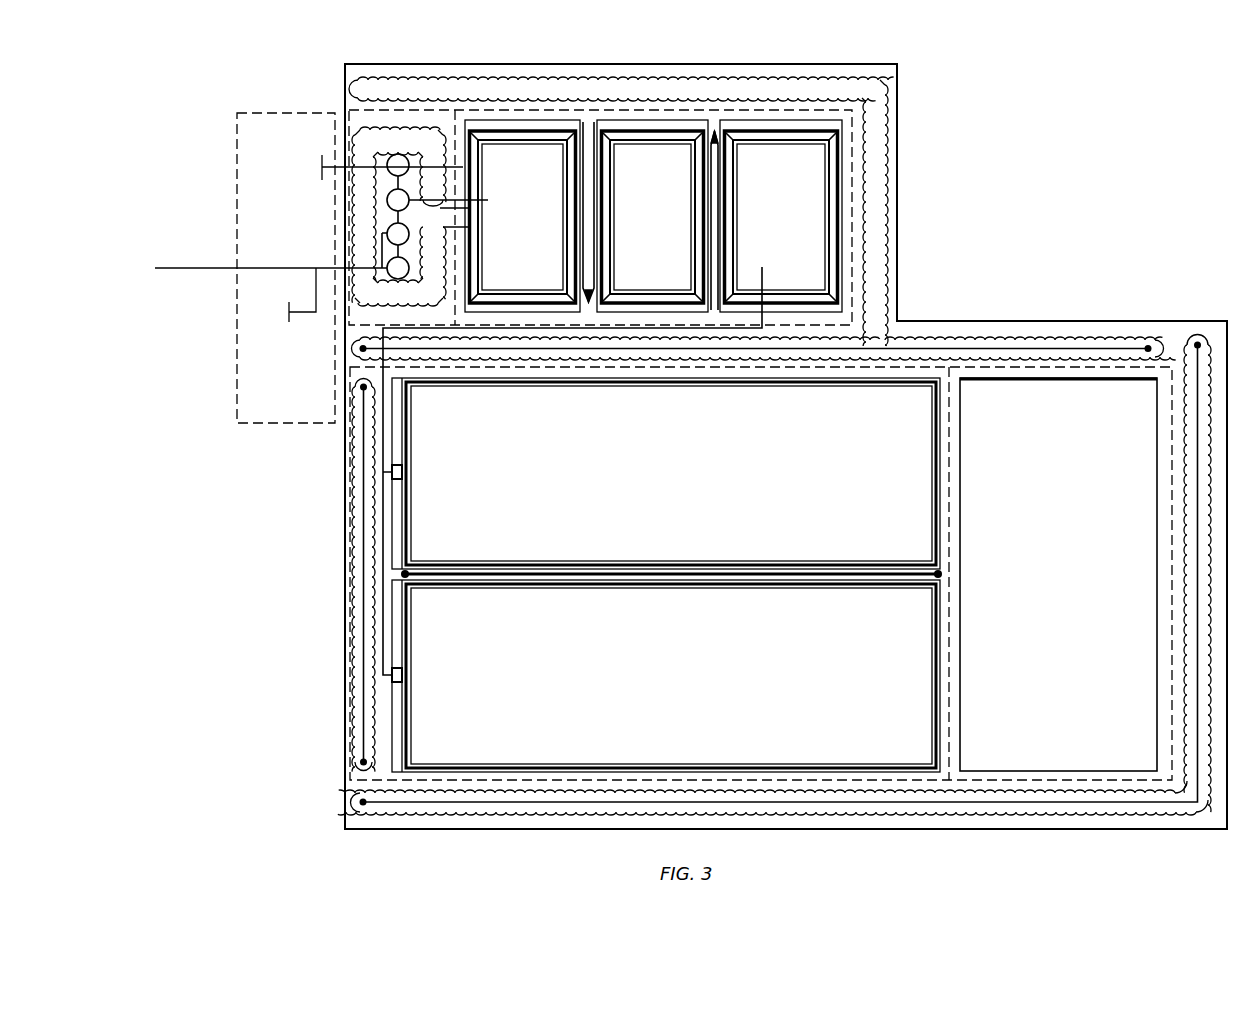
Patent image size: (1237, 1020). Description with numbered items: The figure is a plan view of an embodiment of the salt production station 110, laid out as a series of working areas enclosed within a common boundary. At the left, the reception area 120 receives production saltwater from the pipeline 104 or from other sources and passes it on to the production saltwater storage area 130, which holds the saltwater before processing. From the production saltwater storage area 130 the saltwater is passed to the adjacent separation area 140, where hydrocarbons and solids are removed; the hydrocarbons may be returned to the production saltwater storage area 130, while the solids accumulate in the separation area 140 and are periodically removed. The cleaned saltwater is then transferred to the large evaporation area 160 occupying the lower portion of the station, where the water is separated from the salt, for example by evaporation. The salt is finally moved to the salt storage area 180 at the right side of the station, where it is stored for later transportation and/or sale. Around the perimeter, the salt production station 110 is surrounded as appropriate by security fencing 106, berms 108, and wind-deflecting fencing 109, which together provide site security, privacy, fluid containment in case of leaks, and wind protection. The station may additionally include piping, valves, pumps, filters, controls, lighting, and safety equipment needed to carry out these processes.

The pipeline 104 is at (210, 270).
The security fencing 106 is at (902, 81).
The berms 108 is at (708, 92).
The wind-deflecting fencing 109 is at (1015, 348).
The salt production station 110 is at (290, 650).
The reception area 120 is at (300, 423).
The production saltwater storage area 130 is at (418, 110).
The separation area 140 is at (853, 148).
The evaporation area 160 is at (912, 367).
The salt storage area 180 is at (1068, 367).